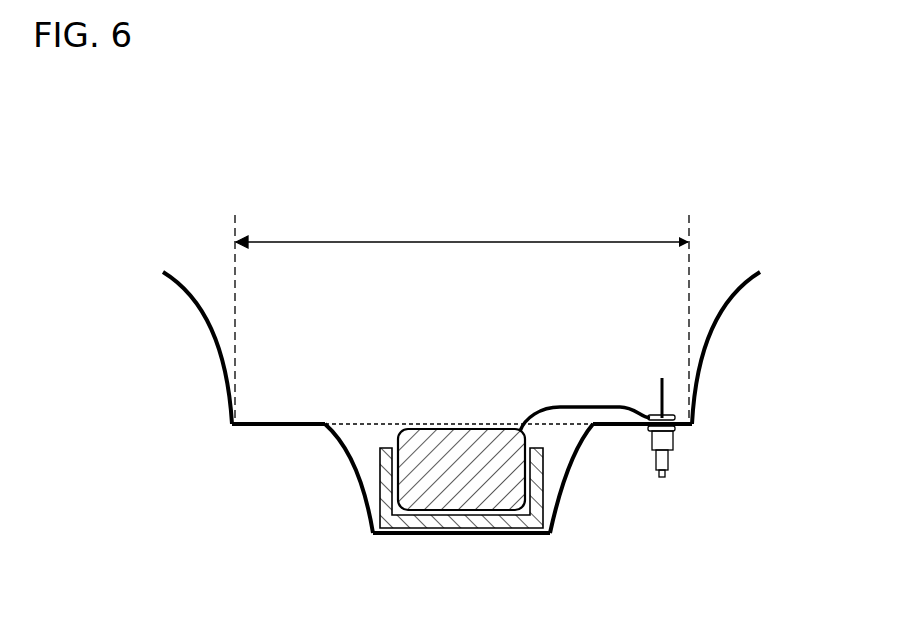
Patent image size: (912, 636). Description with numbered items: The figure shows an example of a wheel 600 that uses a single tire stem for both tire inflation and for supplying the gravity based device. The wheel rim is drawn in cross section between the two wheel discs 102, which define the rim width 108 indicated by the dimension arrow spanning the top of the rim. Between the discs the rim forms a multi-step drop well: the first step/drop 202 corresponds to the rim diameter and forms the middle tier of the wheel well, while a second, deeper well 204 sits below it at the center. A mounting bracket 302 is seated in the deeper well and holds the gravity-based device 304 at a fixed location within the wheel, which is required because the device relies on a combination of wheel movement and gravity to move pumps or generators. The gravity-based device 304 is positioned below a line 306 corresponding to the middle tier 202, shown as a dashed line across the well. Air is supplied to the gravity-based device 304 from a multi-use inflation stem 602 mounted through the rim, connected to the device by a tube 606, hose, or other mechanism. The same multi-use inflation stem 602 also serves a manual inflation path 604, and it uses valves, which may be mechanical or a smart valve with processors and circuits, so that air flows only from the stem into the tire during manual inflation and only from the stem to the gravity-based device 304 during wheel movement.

The wheel 600 is at (292, 190).
The wheel discs 102 is at (165, 275).
The rim width 108 is at (540, 242).
The first step/drop 202 is at (270, 426).
The second, deeper well 204 is at (467, 535).
The mounting bracket 302 is at (543, 495).
The gravity-based device 304 is at (392, 446).
The line 306 is at (398, 423).
The multi-use inflation stem 602 is at (668, 467).
The manual inflation path 604 is at (658, 390).
The tube 606 is at (545, 407).